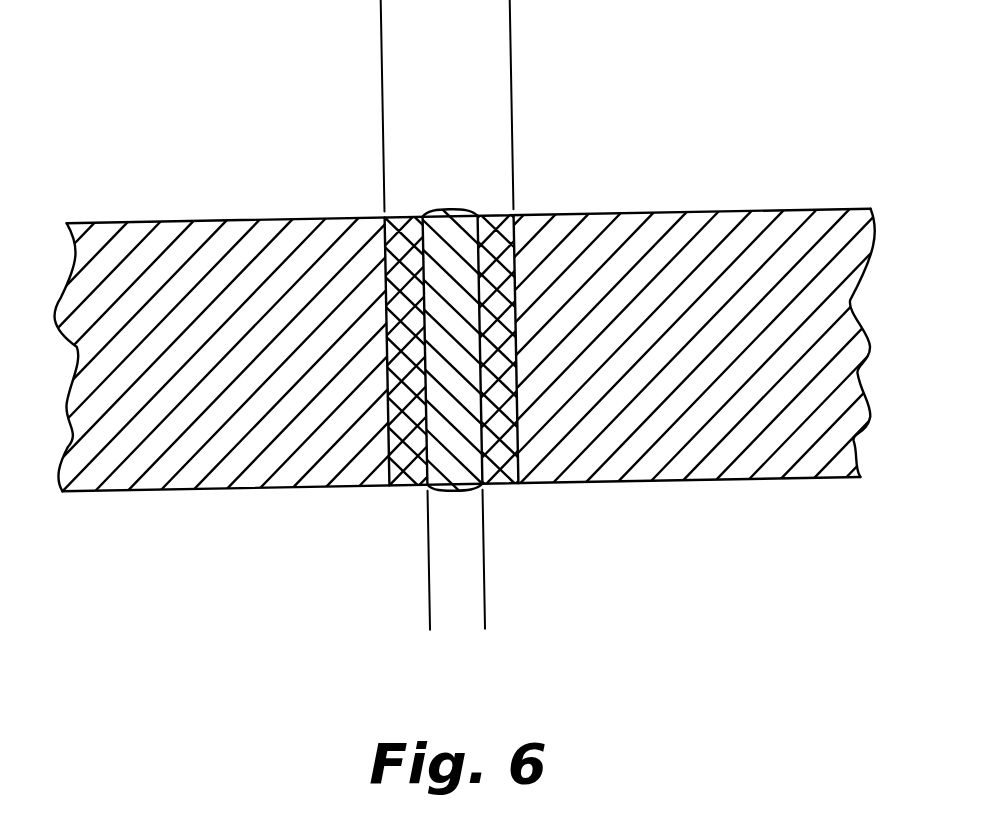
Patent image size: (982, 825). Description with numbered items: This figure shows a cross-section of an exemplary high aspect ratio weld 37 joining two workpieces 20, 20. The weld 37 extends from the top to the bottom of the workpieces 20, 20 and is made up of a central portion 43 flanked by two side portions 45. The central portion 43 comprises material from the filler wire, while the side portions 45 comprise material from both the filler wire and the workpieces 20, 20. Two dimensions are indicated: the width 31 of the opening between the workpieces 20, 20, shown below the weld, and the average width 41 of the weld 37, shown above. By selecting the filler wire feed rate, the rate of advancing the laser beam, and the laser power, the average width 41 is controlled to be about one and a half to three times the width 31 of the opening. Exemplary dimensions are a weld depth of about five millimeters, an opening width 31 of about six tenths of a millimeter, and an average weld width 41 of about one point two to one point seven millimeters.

The workpiece 20 is at (113, 447).
The high aspect ratio weld 37 is at (456, 298).
The central portion 43 is at (450, 217).
The side portions 45 is at (405, 476).
The average width 41 is at (516, 20).
The width of opening 31 is at (534, 597).